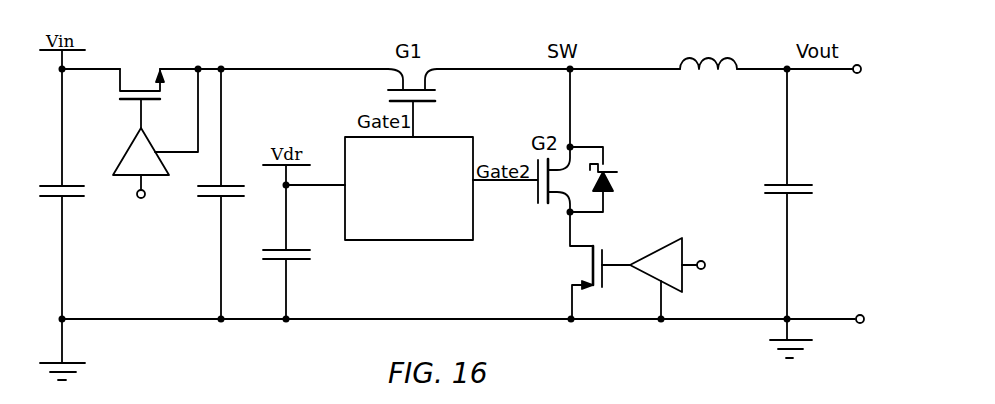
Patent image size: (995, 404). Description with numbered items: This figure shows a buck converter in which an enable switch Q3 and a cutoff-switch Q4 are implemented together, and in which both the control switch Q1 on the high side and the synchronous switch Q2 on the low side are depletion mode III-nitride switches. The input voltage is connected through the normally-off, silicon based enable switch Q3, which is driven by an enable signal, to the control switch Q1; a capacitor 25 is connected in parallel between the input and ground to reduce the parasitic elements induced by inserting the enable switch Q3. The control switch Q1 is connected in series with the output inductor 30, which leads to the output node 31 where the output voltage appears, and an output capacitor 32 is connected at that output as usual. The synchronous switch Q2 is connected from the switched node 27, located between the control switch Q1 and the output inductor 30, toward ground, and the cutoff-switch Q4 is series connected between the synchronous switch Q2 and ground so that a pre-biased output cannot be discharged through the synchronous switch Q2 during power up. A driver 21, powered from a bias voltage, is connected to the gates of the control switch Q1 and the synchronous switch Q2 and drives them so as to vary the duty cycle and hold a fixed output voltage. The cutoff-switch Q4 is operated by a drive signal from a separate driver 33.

The driver 21 is at (410, 242).
The capacitor 25 is at (210, 200).
The switched node 27 is at (575, 75).
The output inductor 30 is at (710, 52).
The output node 31 is at (783, 72).
The output capacitor 32 is at (792, 181).
The driver 33 is at (662, 248).
The control switch Q1 is at (443, 94).
The synchronous switch Q2 is at (615, 150).
The enable switch Q3 is at (170, 55).
The cutoff-switch Q4 is at (608, 250).